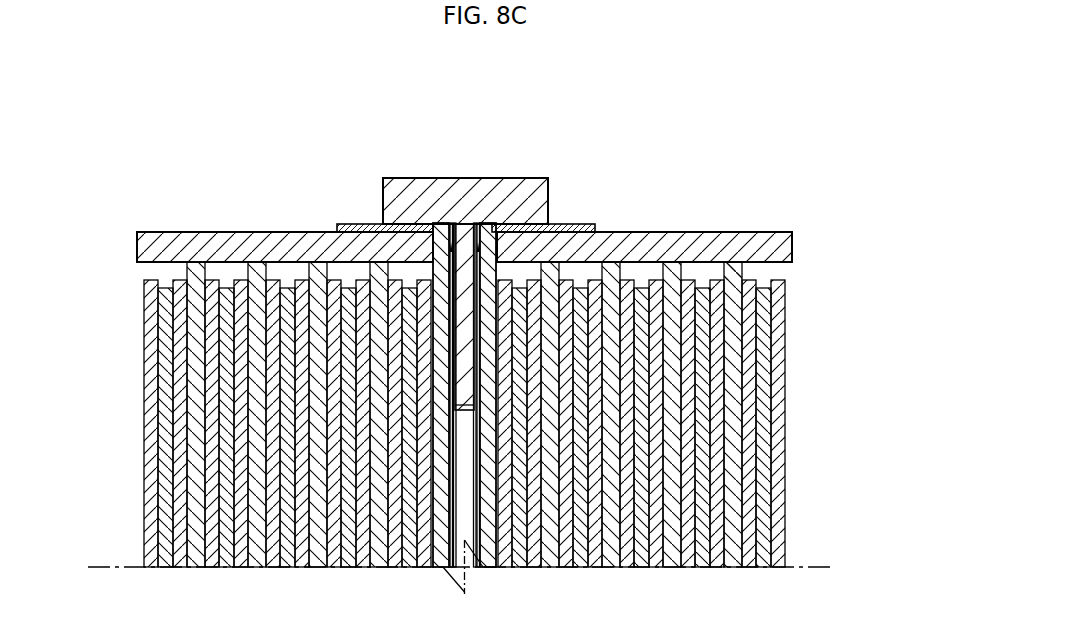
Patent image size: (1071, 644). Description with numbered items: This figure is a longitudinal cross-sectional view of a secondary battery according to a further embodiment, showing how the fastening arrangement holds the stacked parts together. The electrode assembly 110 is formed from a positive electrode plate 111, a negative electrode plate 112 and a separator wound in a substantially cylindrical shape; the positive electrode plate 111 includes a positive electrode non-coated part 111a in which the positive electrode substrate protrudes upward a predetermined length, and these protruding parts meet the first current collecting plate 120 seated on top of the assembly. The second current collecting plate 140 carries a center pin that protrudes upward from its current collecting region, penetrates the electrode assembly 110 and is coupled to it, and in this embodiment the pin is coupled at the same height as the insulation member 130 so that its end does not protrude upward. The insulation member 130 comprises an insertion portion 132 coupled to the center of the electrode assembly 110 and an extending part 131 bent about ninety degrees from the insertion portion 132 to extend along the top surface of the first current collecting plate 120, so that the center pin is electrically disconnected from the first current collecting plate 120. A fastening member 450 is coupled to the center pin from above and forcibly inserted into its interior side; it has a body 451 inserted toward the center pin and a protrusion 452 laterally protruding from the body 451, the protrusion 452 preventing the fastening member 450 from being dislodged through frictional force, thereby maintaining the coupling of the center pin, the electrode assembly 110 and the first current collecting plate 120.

The electrode assembly 110 is at (518, 412).
The positive electrode plate 111 is at (742, 333).
The positive electrode non-coated part 111a is at (754, 271).
The negative electrode plate 112 is at (760, 523).
The first current collecting plate 120 is at (171, 246).
The insulation member 130 is at (642, 175).
The extending part 131 is at (572, 229).
The insertion portion 132 is at (603, 247).
The second current collecting plate 140 is at (485, 458).
The fastening member 450 is at (467, 186).
The body 451 is at (432, 236).
The protrusion 452 is at (433, 262).